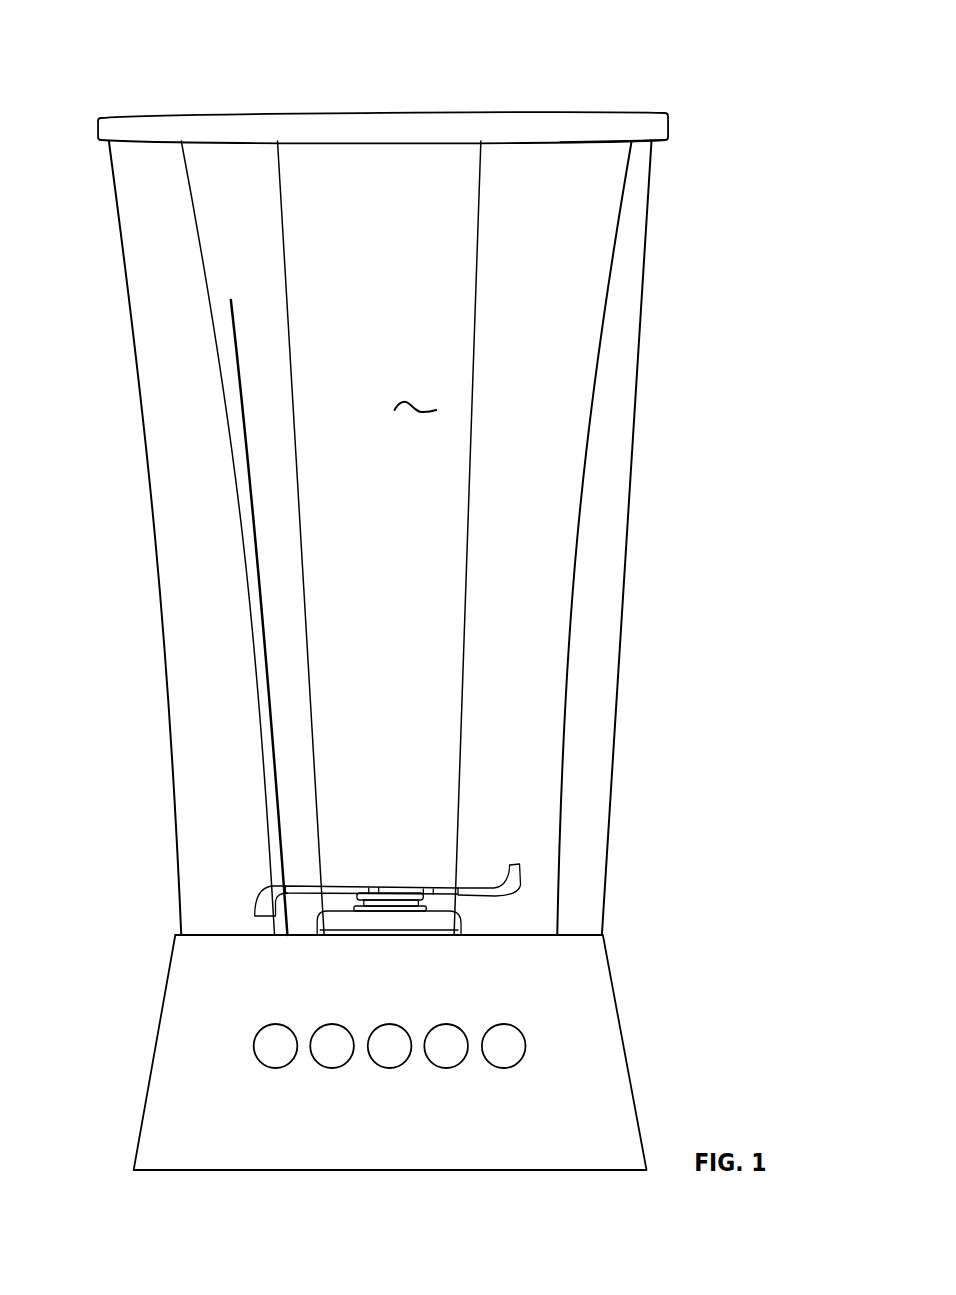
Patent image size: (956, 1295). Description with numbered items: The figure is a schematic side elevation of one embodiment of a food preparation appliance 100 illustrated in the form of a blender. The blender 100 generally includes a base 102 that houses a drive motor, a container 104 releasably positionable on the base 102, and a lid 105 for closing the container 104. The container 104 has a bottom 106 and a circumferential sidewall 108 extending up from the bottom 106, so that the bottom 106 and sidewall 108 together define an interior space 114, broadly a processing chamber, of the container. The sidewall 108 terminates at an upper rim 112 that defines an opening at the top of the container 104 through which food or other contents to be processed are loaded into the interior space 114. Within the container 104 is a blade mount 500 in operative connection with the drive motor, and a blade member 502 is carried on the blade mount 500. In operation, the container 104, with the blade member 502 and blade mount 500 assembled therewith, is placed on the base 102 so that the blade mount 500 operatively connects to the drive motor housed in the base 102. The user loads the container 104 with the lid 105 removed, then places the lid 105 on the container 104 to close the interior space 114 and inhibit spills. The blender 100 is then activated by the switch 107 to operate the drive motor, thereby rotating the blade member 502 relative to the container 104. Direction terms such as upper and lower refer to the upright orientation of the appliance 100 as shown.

The food preparation appliance 100 is at (708, 50).
The base 102 is at (623, 1080).
The container 104 is at (158, 548).
The lid 105 is at (332, 111).
The bottom 106 is at (192, 929).
The switch 107 is at (388, 1021).
The sidewall 108 is at (120, 247).
The upper rim 112 is at (618, 138).
The interior space 114 is at (421, 404).
The blade mount 500 is at (447, 920).
The blade member 502 is at (443, 884).